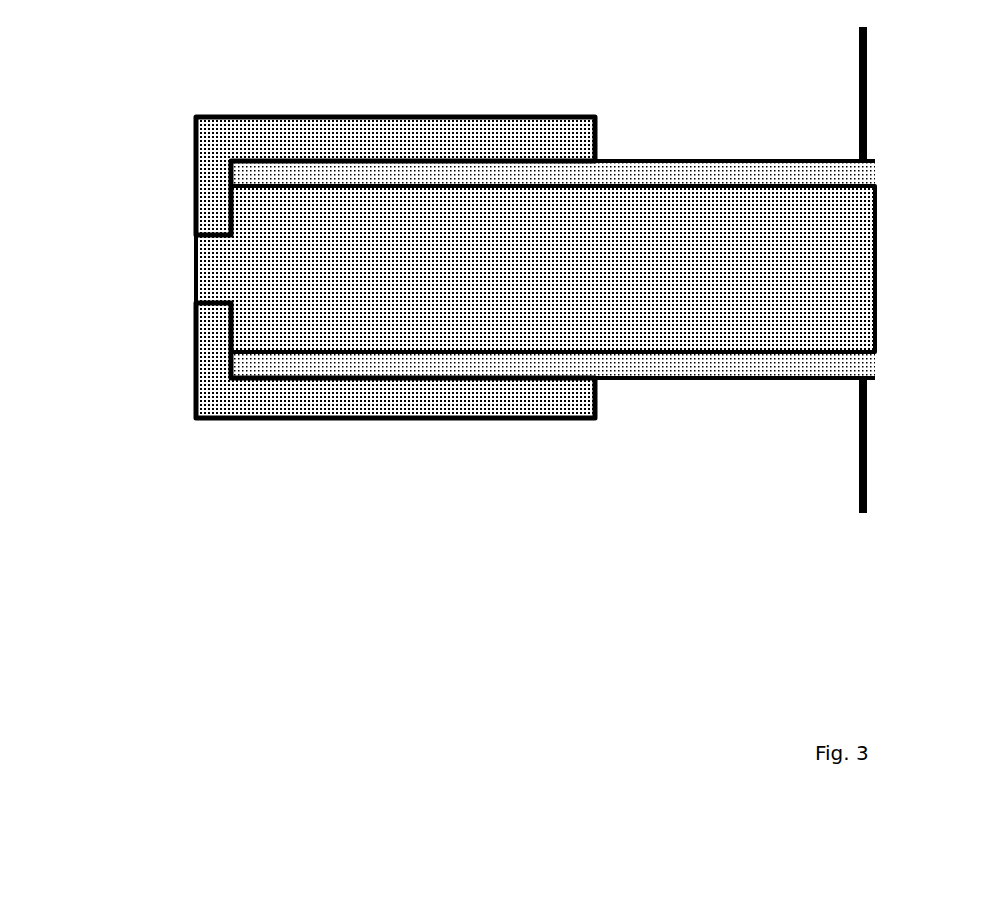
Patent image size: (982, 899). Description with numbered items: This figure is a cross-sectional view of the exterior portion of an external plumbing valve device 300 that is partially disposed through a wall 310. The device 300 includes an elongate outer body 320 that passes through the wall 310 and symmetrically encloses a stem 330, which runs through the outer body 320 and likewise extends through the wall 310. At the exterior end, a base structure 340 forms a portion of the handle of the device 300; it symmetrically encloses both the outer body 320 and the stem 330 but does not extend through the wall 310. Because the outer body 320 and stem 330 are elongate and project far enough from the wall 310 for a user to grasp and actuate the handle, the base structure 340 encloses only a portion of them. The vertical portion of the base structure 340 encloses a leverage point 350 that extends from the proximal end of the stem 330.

The external plumbing valve device 300 is at (298, 652).
The wall 310 is at (860, 428).
The outer body 320 is at (712, 161).
The stem 330 is at (642, 353).
The base structure 340 is at (210, 338).
The leverage point 350 is at (210, 268).